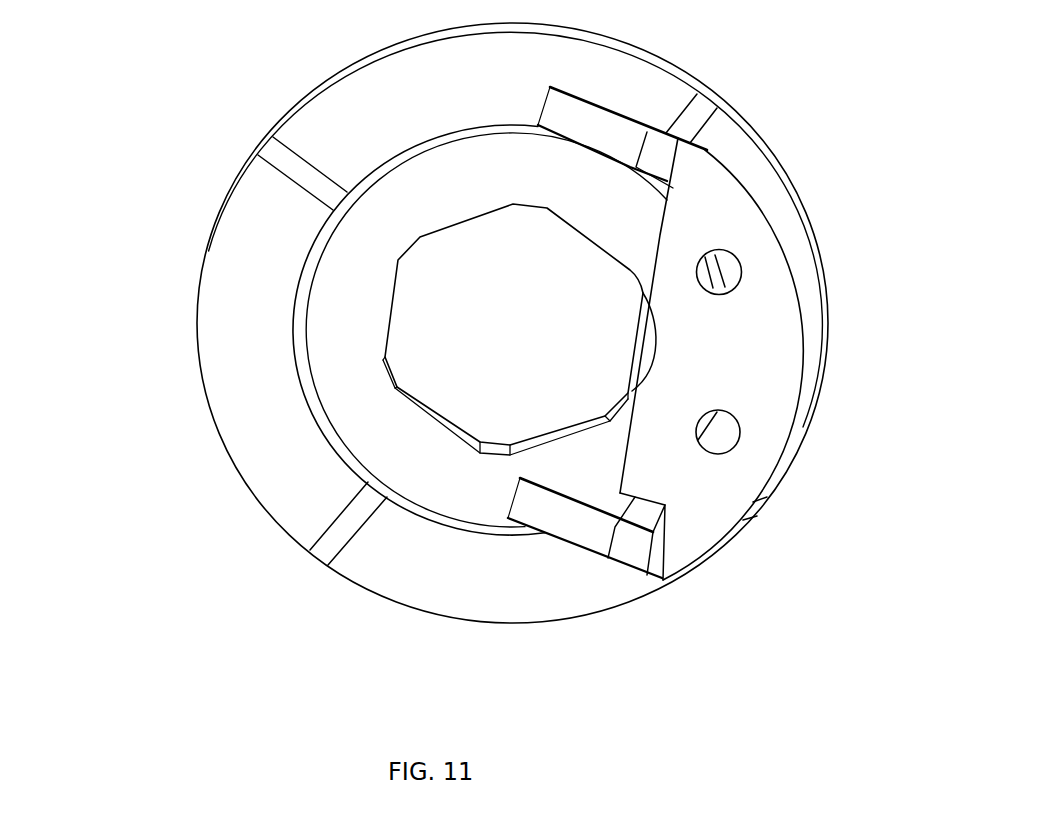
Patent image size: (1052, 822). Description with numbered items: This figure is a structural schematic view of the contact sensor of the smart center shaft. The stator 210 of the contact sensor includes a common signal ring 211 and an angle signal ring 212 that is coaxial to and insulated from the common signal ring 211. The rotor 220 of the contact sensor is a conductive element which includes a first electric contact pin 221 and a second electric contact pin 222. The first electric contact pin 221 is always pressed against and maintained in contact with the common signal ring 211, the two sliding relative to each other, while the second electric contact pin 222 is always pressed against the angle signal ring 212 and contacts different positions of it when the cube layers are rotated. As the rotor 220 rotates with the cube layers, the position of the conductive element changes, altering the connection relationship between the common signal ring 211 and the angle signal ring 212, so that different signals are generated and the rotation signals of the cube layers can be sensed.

The stator 210 is at (433, 323).
The common signal ring 211 is at (352, 298).
The angle signal ring 212 is at (262, 228).
The rotor 220 is at (765, 353).
The first electric contact pin 221 is at (618, 123).
The second electric contact pin 222 is at (588, 537).